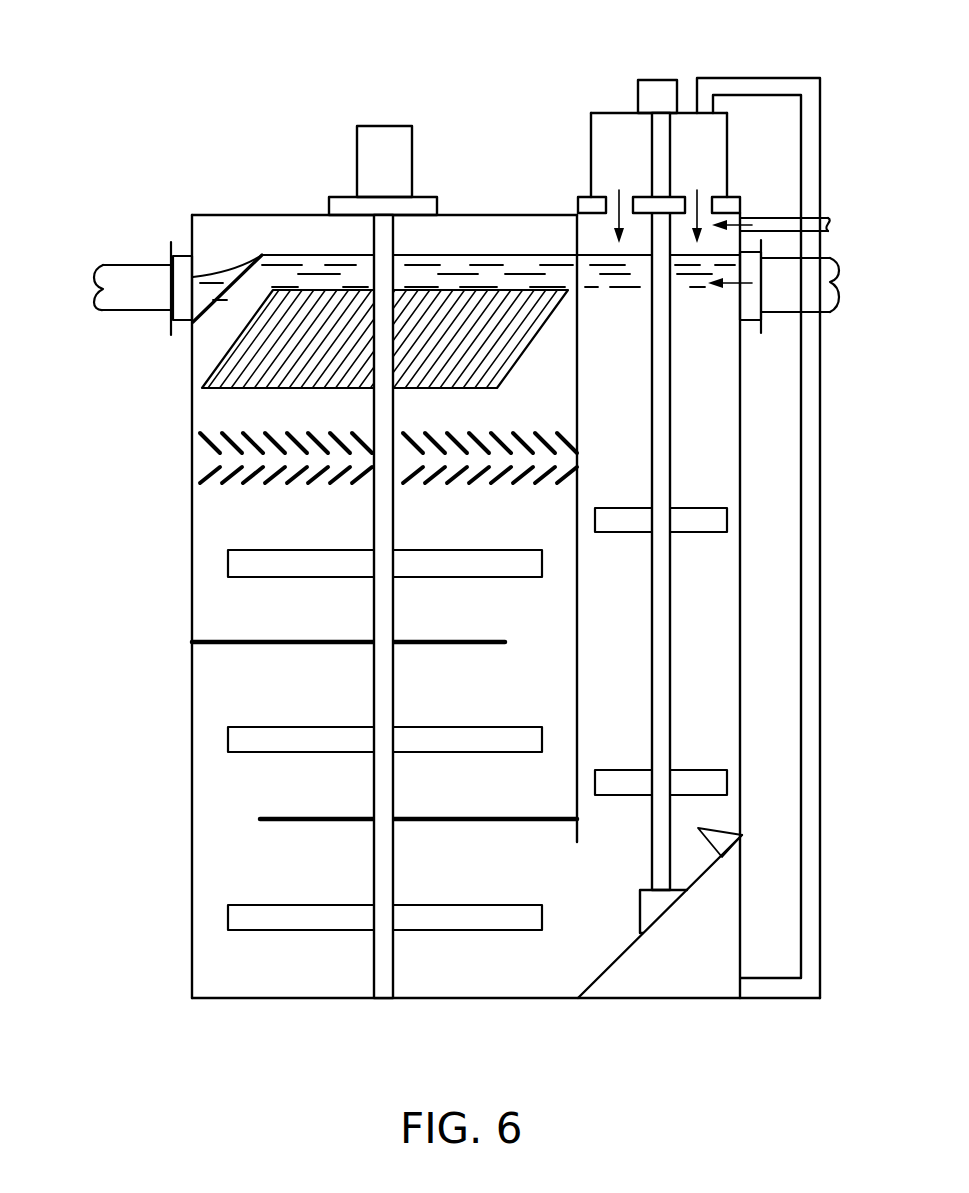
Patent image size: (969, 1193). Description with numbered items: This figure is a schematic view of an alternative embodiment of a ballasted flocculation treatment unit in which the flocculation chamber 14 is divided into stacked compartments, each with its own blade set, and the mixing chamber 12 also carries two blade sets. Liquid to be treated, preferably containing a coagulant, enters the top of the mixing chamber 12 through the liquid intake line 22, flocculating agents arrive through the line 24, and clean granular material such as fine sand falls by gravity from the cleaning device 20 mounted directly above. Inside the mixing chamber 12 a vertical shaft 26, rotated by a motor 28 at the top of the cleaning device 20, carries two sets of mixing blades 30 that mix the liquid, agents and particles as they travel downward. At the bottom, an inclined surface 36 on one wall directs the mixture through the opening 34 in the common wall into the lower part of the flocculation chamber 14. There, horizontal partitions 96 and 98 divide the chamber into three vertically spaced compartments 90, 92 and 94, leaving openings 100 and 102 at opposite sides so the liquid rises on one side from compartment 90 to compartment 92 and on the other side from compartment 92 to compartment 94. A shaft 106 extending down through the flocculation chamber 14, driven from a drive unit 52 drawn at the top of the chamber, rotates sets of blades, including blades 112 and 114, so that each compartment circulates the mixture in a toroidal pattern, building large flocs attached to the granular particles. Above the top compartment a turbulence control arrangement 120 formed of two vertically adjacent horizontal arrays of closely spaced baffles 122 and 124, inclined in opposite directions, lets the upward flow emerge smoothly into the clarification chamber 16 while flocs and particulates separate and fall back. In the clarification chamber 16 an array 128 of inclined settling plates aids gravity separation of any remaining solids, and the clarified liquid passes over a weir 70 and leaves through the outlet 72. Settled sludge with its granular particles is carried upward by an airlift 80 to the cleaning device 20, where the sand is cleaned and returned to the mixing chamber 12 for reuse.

The mixing chamber 12 is at (751, 461).
The flocculation chamber 14 is at (175, 714).
The clarification chamber 16 is at (173, 210).
The cleaning device 20 is at (608, 104).
The liquid intake line 22 is at (838, 303).
The line 24 is at (826, 218).
The vertical shaft 26 is at (668, 412).
The motor 28 is at (663, 88).
The mixing blades 30 is at (715, 517).
The opening 34 is at (578, 941).
The inclined surface 36 is at (698, 828).
The motor 52 is at (383, 135).
The weir 70 is at (240, 272).
The outlet 72 is at (113, 273).
The airlift 80 is at (814, 583).
The compartment 90 is at (241, 880).
The compartment 92 is at (230, 775).
The compartment 94 is at (215, 597).
The horizontal partition 96 is at (290, 820).
The horizontal partition 98 is at (299, 628).
The opening 100 is at (225, 823).
The opening 102 is at (327, 667).
The shaft 106 is at (378, 505).
The blades 112 is at (237, 738).
The blades 114 is at (237, 563).
The turbulence control arrangement 120 is at (190, 451).
The array of baffles 122 is at (521, 446).
The array of baffles 124 is at (450, 479).
The array of inclined settling plates 128 is at (228, 343).